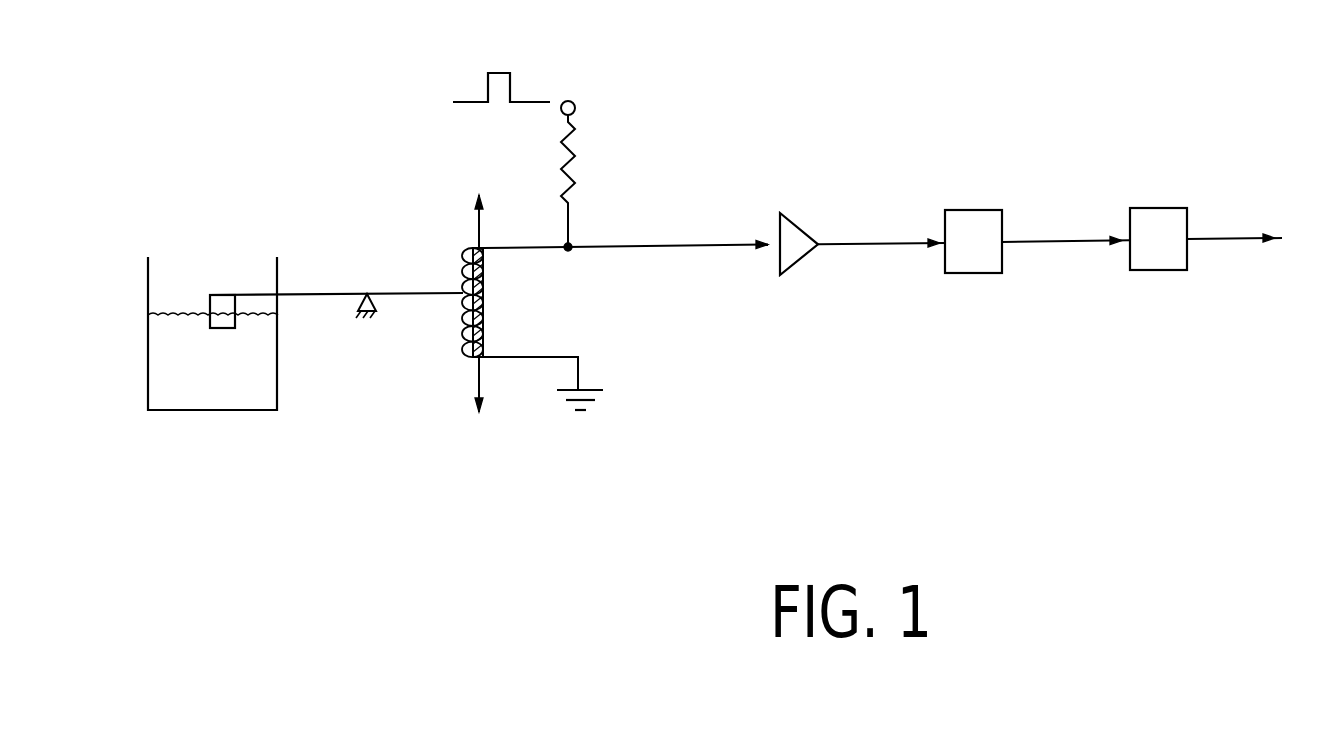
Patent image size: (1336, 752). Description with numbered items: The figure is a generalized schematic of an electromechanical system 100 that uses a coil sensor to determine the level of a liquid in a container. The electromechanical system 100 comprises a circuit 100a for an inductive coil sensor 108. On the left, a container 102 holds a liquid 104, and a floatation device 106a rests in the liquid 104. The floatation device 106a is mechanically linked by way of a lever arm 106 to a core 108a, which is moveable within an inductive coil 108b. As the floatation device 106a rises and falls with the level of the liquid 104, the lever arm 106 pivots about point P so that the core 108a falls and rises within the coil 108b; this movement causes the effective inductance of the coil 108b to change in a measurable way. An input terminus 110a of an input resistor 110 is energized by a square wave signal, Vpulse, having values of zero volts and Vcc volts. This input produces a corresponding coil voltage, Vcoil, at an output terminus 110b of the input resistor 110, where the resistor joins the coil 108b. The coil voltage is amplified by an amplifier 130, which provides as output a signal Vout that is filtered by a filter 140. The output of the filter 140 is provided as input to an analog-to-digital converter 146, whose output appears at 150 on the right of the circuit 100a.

The electromechanical system 100 is at (526, 565).
The circuit 100a is at (974, 455).
The container 102 is at (167, 410).
The liquid 104 is at (233, 392).
The lever arm 106 is at (313, 295).
The floatation device 106a is at (213, 310).
The inductive coil sensor 108 is at (455, 374).
The core 108a is at (463, 256).
The inductive coil 108b is at (490, 316).
The input resistor 110 is at (577, 172).
The input terminus 110a is at (562, 111).
The output terminus 110b is at (572, 243).
The amplifier 130 is at (793, 215).
The filter 140 is at (963, 209).
The analog-to-digital converter 146 is at (1158, 208).
The output 150 is at (1250, 240).